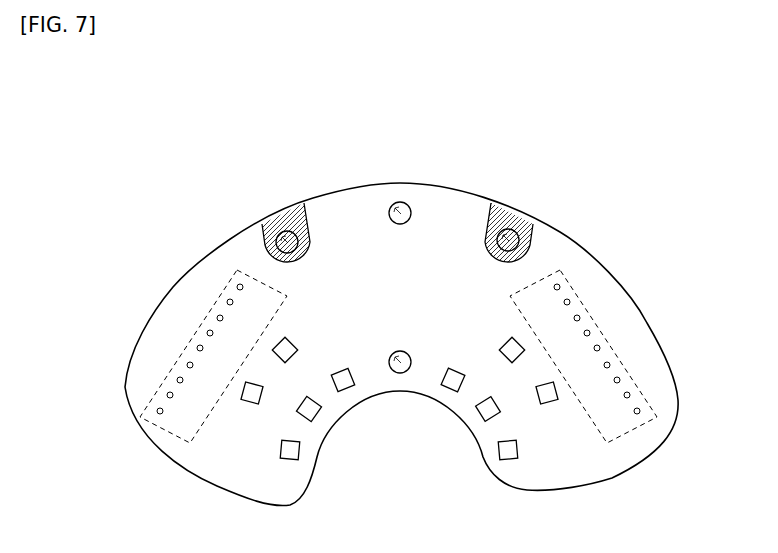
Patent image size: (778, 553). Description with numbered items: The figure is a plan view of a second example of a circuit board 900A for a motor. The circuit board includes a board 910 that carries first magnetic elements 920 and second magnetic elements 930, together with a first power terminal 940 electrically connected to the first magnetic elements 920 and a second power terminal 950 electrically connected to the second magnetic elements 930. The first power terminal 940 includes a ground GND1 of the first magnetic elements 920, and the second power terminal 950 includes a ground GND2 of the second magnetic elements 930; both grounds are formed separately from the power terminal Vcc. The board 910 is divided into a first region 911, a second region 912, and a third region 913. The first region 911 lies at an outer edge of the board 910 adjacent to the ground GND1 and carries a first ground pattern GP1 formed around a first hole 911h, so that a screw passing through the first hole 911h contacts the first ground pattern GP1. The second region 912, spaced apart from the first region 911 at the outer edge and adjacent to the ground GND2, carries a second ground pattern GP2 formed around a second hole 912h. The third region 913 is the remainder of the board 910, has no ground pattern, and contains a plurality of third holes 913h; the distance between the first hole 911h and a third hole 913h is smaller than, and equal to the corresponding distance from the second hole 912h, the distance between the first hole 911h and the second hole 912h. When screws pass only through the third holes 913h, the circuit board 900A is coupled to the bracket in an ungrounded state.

The circuit board 900A is at (160, 292).
The board 910 is at (543, 111).
The first region 911 is at (504, 205).
The second region 912 is at (296, 205).
The third region 913 is at (433, 212).
The first hole 911h is at (518, 236).
The second hole 912h is at (276, 242).
The third hole 913h is at (391, 222).
The first ground pattern GP1 is at (540, 238).
The second ground pattern GP2 is at (273, 220).
The ground of the first magnetic elements GND1 is at (600, 348).
The ground of the second magnetic elements GND2 is at (197, 350).
The first magnetic elements 920 is at (546, 401).
The second magnetic elements 930 is at (248, 401).
The first power terminal 940 is at (640, 386).
The second power terminal 950 is at (139, 414).